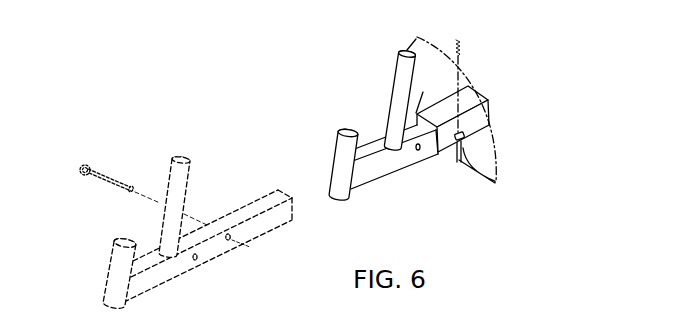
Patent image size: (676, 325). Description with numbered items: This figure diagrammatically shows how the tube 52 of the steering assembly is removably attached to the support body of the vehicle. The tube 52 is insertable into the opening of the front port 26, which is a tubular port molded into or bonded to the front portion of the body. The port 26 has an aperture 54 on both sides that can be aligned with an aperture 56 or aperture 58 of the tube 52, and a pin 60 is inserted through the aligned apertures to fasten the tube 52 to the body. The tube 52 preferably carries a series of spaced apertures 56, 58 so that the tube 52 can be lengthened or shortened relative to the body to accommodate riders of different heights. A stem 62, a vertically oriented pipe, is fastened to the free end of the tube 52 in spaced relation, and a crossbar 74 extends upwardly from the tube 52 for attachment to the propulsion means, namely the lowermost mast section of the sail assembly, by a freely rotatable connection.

The front port 26 is at (441, 92).
The tube 52 is at (276, 224).
The aperture 54 is at (501, 90).
The aperture 56 is at (251, 255).
The aperture 58 is at (332, 224).
The pin 60 is at (290, 175).
The stem 62 is at (208, 217).
The crossbar 74 is at (287, 154).